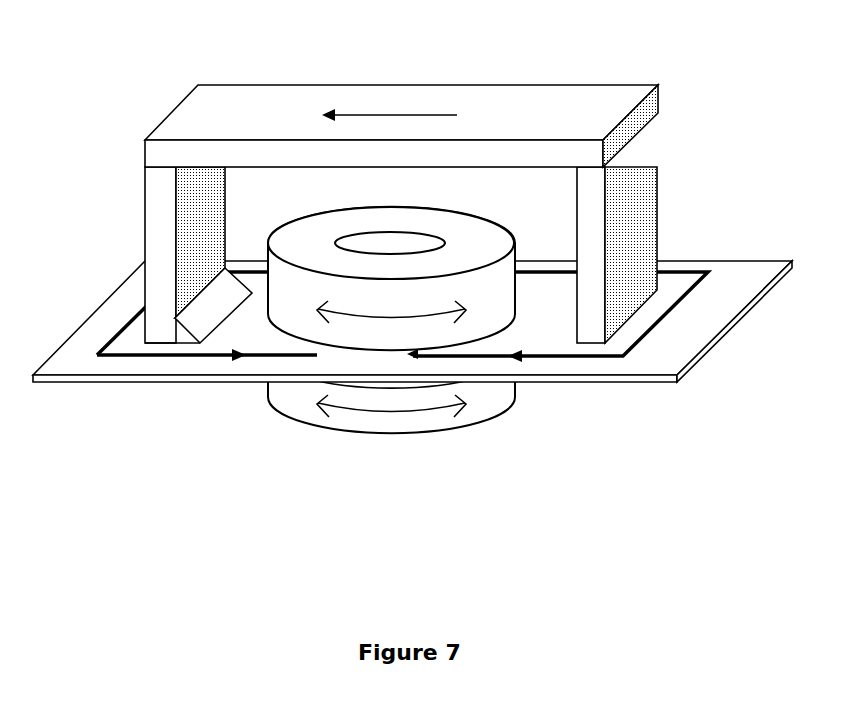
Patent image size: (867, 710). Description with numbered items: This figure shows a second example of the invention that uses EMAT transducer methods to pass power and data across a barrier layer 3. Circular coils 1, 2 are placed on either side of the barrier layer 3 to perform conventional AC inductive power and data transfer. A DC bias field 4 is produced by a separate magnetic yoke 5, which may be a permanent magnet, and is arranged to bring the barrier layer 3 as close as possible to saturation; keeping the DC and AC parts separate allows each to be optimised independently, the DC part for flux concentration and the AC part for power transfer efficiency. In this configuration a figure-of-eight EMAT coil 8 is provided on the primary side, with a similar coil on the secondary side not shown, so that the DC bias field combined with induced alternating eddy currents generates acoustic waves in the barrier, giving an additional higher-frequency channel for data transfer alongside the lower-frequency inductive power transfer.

The circular coil 1 is at (515, 255).
The circular coil 2 is at (390, 433).
The barrier layer 3 is at (677, 380).
The DC bias field 4 is at (382, 115).
The magnetic yoke 5 is at (145, 250).
The current loop (coil) 8 is at (430, 349).